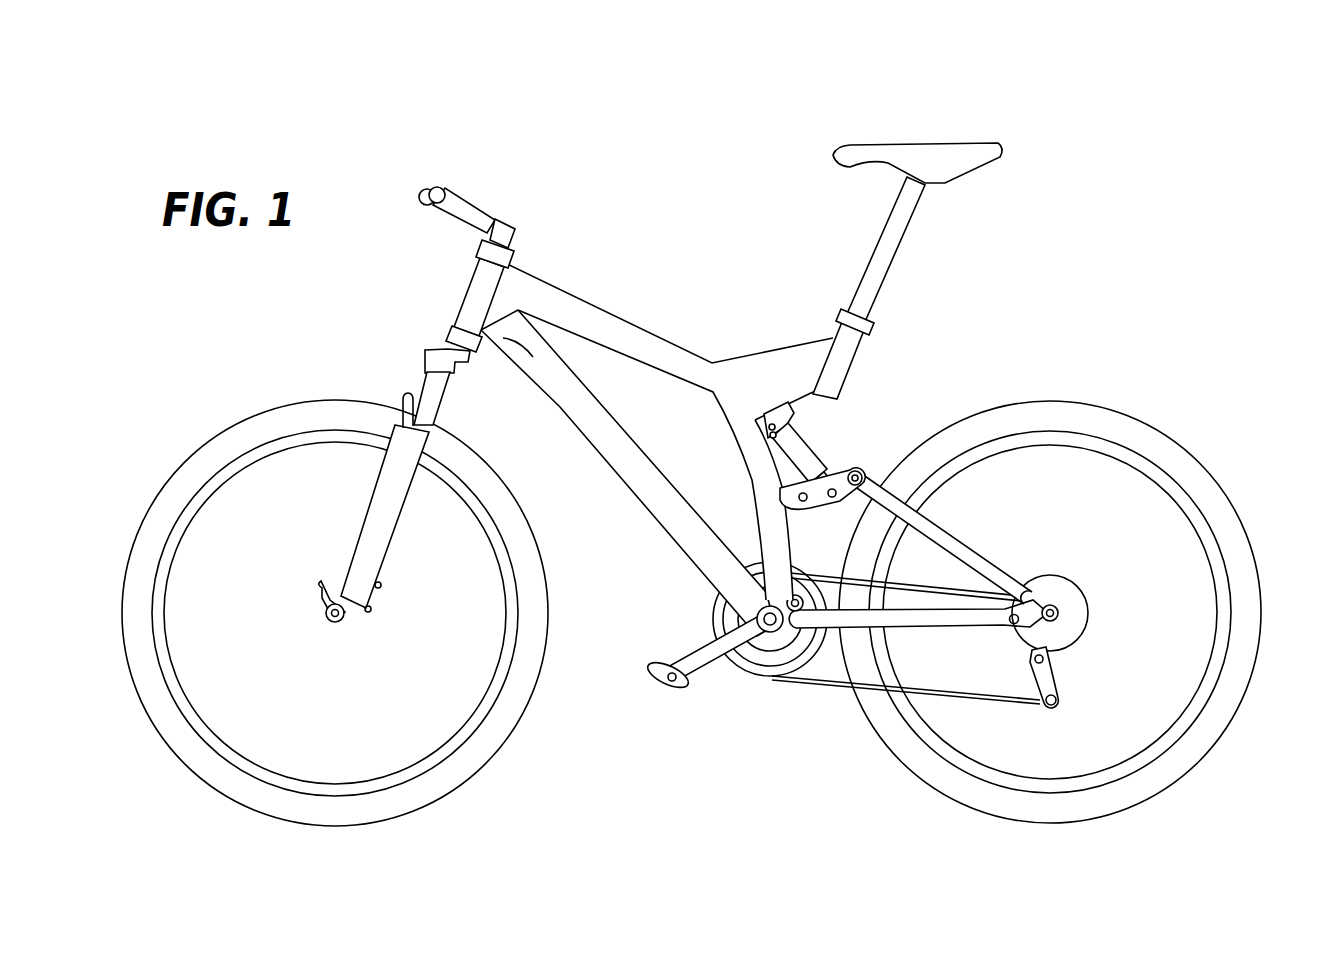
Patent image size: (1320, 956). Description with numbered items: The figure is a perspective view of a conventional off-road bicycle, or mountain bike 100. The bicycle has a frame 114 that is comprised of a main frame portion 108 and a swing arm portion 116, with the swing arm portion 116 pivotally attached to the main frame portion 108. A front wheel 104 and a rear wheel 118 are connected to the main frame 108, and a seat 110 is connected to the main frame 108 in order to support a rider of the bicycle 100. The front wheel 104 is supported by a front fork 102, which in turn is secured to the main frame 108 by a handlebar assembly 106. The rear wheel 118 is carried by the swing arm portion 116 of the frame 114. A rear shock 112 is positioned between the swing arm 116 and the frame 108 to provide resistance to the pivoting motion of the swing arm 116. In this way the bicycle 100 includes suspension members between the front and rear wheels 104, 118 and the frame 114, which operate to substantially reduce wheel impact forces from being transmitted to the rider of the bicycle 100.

The mountain bike 100 is at (727, 98).
The front fork 102 is at (352, 554).
The front wheel 104 is at (238, 418).
The handlebar assembly 106 is at (433, 185).
The main frame portion 108 is at (636, 320).
The seat 110 is at (925, 140).
The rear shock 112 is at (813, 452).
The frame 114 is at (1079, 268).
The swing arm portion 116 is at (947, 530).
The rear wheel 118 is at (1210, 478).